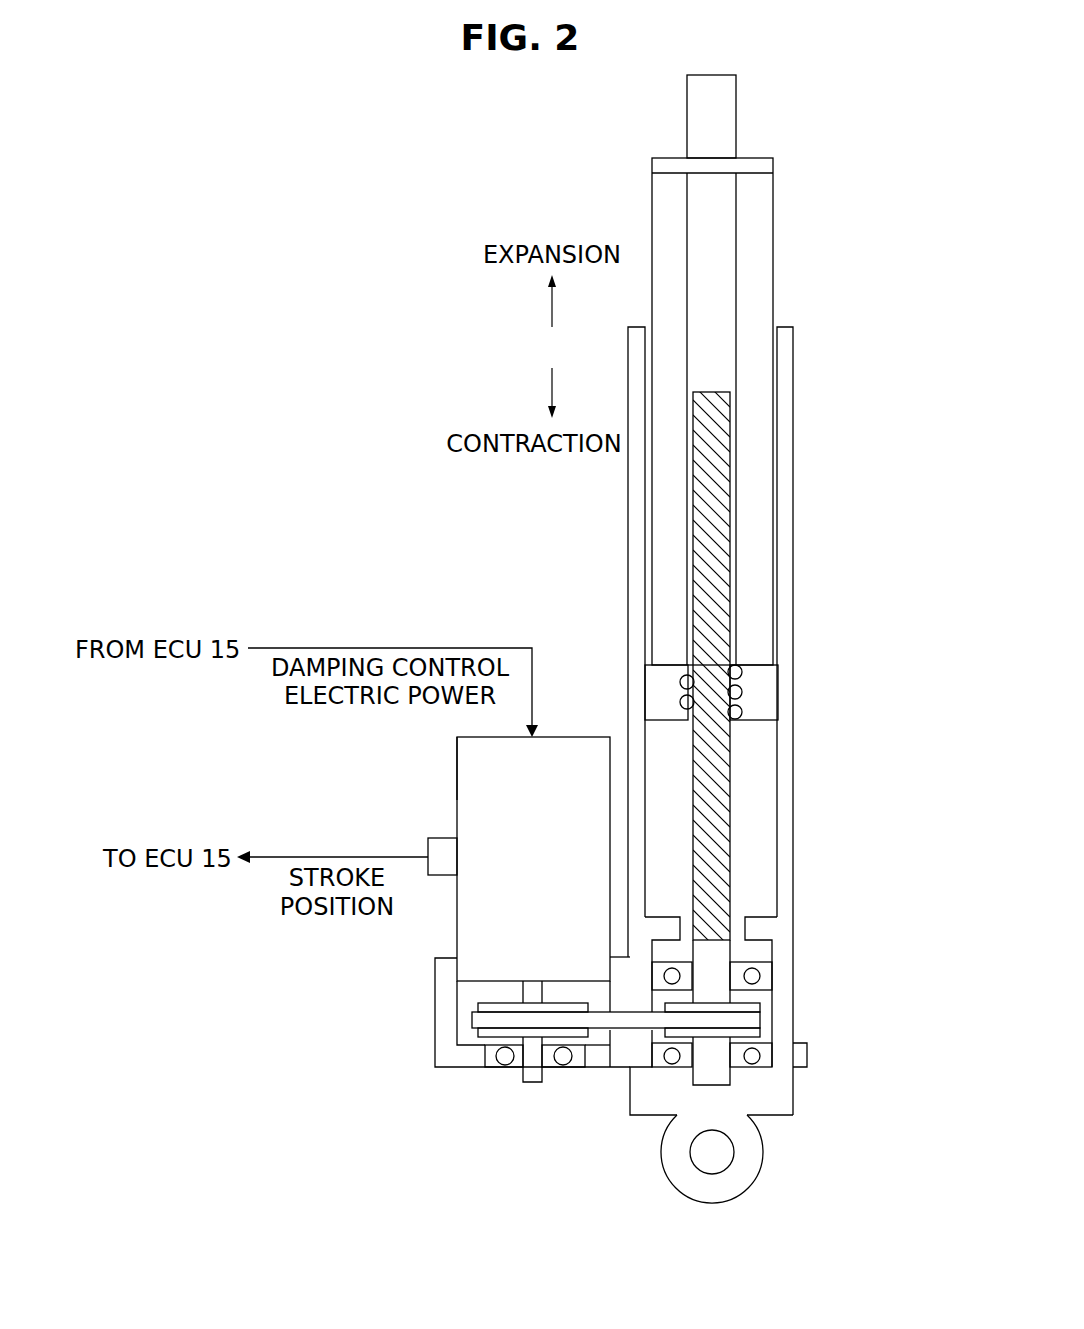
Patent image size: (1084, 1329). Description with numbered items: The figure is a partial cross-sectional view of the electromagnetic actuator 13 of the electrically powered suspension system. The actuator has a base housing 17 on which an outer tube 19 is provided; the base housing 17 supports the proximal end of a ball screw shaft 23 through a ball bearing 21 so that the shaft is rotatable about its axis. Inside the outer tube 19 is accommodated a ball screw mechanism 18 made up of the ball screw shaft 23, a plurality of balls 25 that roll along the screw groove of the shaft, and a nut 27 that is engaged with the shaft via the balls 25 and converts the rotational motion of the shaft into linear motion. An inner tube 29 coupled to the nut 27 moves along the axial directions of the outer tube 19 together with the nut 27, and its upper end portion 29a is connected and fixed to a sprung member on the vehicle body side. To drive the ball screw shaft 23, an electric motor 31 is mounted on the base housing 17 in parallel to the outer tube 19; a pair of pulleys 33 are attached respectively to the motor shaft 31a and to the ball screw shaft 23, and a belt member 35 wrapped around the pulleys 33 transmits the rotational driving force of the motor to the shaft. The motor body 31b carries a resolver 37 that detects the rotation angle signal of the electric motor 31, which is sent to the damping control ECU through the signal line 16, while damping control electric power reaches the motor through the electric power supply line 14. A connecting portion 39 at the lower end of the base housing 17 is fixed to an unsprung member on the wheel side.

The electromagnetic actuator 13 is at (813, 178).
The electric power supply line 14 is at (385, 645).
The signal line 16 is at (330, 857).
The base housing 17 is at (786, 1009).
The ball screw mechanism 18 is at (866, 593).
The outer tube 19 is at (786, 378).
The ball bearing 21 is at (753, 978).
The ball screw shaft 23 is at (718, 767).
The balls 25 is at (742, 712).
The nut 27 is at (668, 677).
The inner tube 29 is at (755, 250).
The upper end portion 29a is at (720, 120).
The electric motor 31 is at (560, 758).
The motor shaft 31a is at (532, 1080).
The motor body 31b is at (471, 765).
The pulleys 33 is at (473, 1030).
The belt member 35 is at (623, 1025).
The resolver 37 is at (445, 845).
The connecting portion 39 is at (752, 1152).